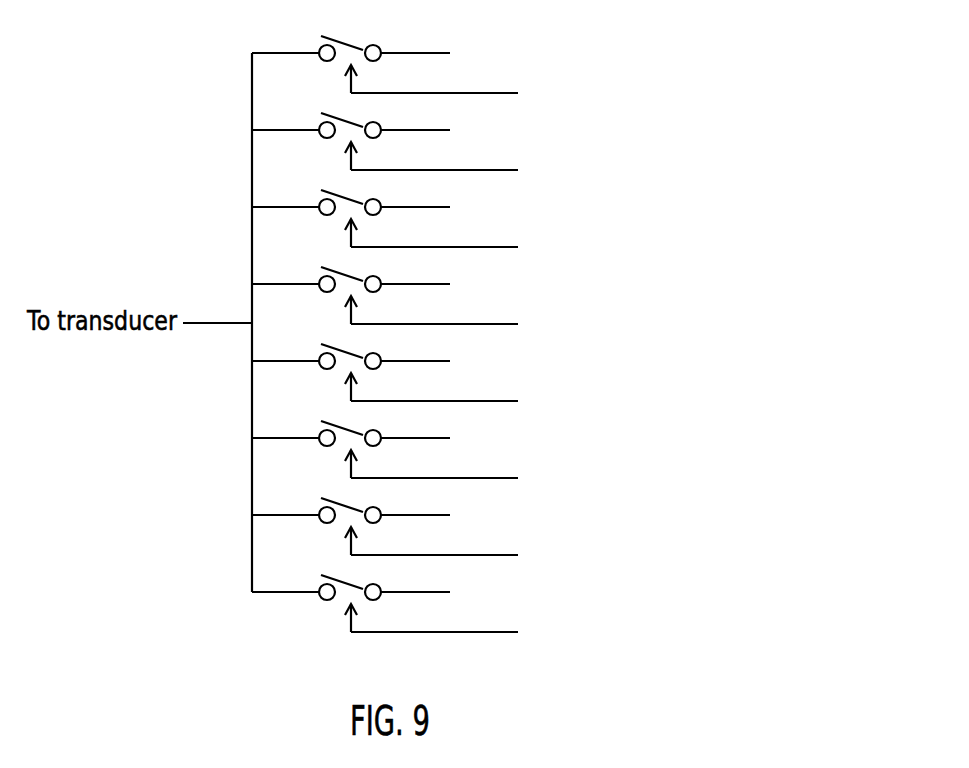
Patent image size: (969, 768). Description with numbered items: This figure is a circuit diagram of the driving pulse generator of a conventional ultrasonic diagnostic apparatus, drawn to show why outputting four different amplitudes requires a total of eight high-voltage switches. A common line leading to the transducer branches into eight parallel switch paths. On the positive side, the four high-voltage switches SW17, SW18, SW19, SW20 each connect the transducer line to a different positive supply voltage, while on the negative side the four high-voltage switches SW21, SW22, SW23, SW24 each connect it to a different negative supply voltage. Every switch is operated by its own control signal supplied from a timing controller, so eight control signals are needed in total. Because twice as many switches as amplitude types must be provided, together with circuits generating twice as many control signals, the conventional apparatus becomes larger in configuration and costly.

The high-voltage switch SW17 is at (517, 59).
The high-voltage switch SW18 is at (517, 136).
The high-voltage switch SW19 is at (517, 213).
The high-voltage switch SW20 is at (517, 290).
The high-voltage switch SW21 is at (517, 367).
The high-voltage switch SW22 is at (517, 444).
The high-voltage switch SW23 is at (517, 521).
The high-voltage switch SW24 is at (517, 598).